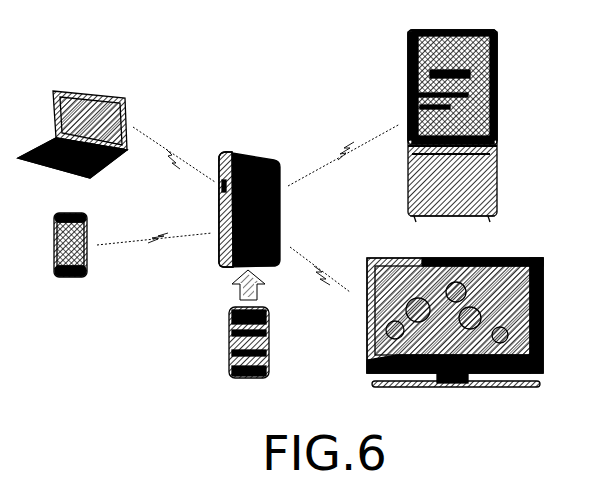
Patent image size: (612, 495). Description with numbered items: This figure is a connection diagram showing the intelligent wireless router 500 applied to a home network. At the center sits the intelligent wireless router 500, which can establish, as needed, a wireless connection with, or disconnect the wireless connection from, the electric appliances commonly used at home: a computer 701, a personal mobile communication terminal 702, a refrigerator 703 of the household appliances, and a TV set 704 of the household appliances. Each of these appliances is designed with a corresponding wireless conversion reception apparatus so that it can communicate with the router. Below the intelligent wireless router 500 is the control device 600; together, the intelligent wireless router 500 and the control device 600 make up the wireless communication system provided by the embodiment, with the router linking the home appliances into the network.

The intelligent wireless router 500 is at (240, 150).
The control device 600 is at (270, 338).
The computer 701 is at (126, 100).
The personal mobile communication terminal 702 is at (88, 225).
The refrigerator 703 is at (497, 80).
The TV set 704 is at (497, 258).